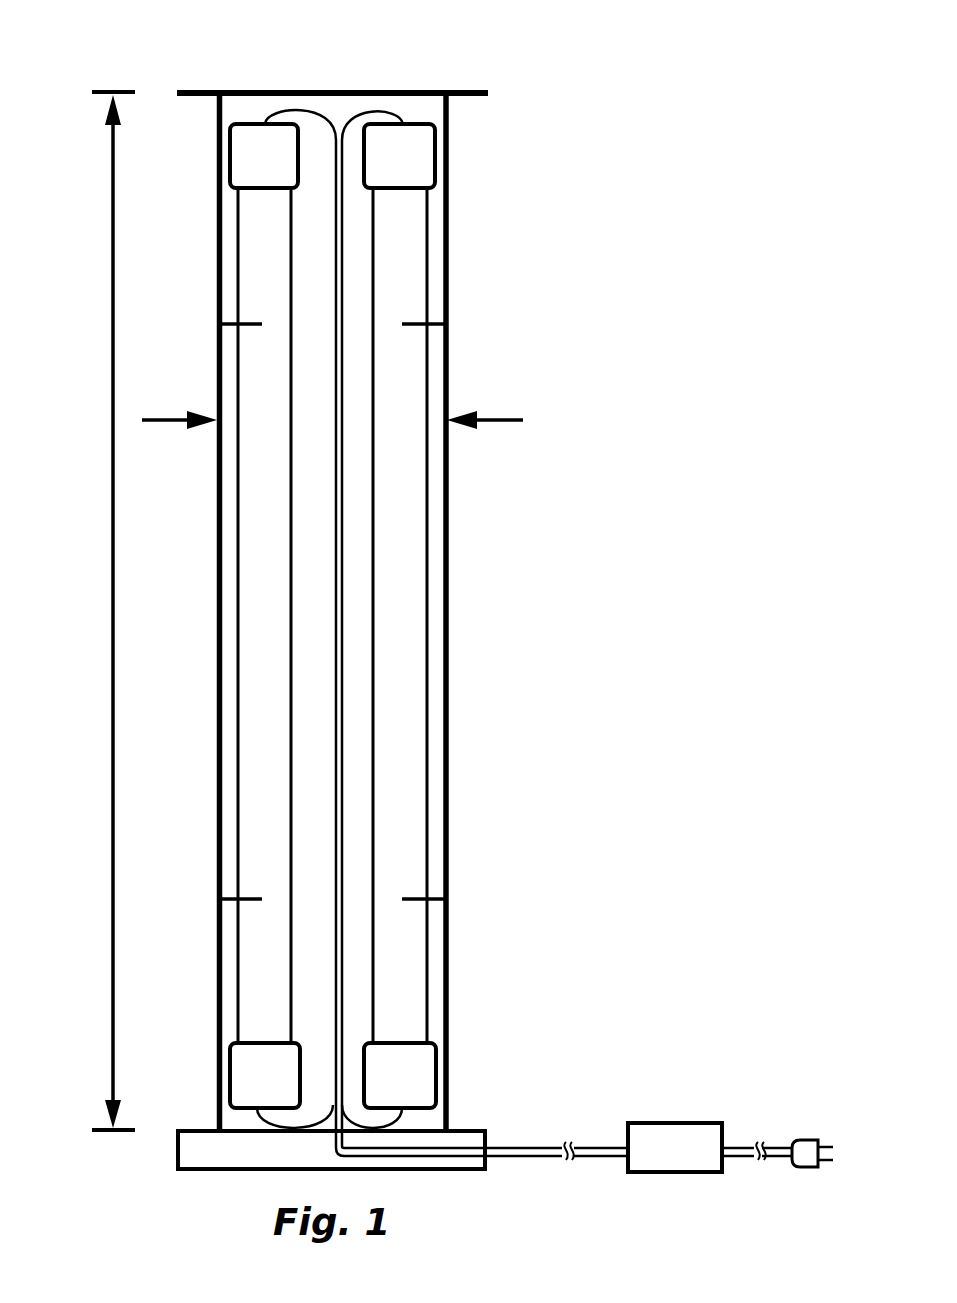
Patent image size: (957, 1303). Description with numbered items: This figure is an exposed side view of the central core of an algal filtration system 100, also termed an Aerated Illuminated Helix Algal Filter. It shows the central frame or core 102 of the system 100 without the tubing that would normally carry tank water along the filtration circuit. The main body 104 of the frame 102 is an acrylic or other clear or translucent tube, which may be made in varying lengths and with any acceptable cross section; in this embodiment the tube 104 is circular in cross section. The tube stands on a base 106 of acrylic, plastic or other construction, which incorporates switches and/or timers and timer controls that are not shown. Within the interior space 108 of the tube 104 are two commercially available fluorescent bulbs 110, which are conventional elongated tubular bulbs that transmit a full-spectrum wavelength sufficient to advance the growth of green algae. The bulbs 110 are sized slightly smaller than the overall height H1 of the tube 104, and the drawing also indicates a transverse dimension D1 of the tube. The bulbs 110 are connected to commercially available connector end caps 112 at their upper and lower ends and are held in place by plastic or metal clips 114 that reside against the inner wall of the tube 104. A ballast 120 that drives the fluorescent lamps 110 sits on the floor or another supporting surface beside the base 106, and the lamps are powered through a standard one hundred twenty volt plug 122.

The algal filtration system 100 is at (541, 358).
The central frame or core 102 is at (332, 52).
The main body 104 is at (408, 613).
The base 106 is at (391, 1119).
The interior space 108 is at (413, 93).
The fluorescent bulbs 110 is at (411, 615).
The connector end caps 112 is at (400, 165).
The clips 114 is at (338, 616).
The ballast 120 is at (675, 1110).
The plug 122 is at (793, 1108).
The height H1 is at (112, 442).
The depth dimension D1 is at (362, 440).